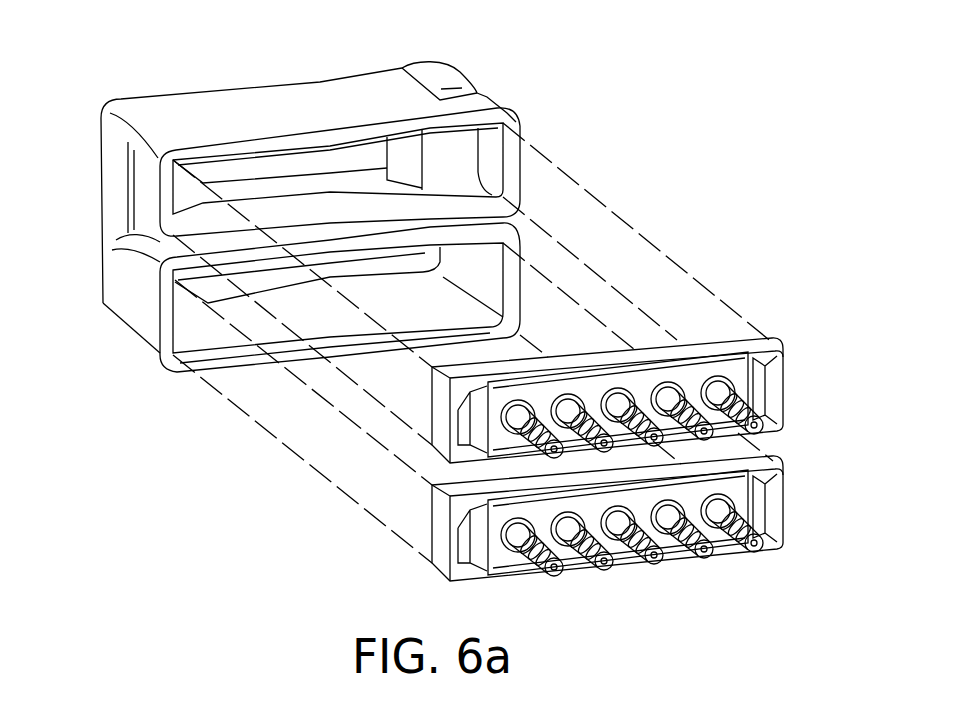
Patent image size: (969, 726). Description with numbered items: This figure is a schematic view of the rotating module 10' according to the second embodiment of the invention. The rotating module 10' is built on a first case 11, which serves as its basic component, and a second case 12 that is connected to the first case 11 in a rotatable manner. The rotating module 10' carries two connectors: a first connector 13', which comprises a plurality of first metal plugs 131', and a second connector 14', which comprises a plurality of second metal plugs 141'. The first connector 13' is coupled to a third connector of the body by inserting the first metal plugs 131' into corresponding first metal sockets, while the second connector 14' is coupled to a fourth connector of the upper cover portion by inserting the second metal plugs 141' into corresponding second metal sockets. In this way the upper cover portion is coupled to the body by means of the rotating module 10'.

The rotating module 10' is at (451, 293).
The first case 11 is at (281, 188).
The second case 12 is at (402, 97).
The first connector 13' is at (662, 518).
The first metal plugs 131' is at (697, 535).
The second connector 14' is at (662, 400).
The second metal plugs 141' is at (697, 417).